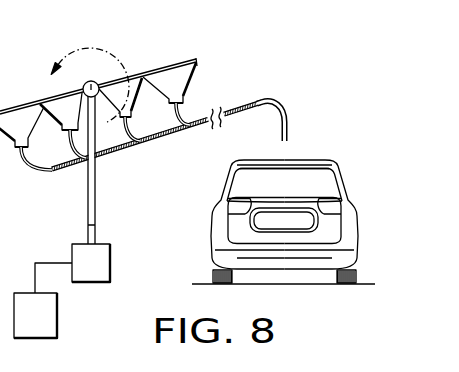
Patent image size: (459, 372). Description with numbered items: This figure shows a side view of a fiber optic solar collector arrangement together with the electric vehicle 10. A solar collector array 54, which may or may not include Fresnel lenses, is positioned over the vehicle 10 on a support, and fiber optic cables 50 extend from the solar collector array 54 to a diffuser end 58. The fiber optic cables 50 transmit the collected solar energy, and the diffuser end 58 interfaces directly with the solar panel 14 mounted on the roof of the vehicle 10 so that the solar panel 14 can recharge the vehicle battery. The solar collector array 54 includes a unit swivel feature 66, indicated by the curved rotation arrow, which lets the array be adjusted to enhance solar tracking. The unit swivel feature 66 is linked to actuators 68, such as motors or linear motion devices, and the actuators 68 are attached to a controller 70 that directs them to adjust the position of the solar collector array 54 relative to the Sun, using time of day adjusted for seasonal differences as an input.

The electric vehicle 10 is at (266, 194).
The solar panel 14 is at (297, 158).
The fiber optic cables 50 is at (262, 103).
The solar collector array 54 is at (197, 62).
The diffuser end 58 is at (295, 103).
The unit swivel feature 66 is at (92, 88).
The actuators 68 is at (72, 257).
The controller 70 is at (58, 318).